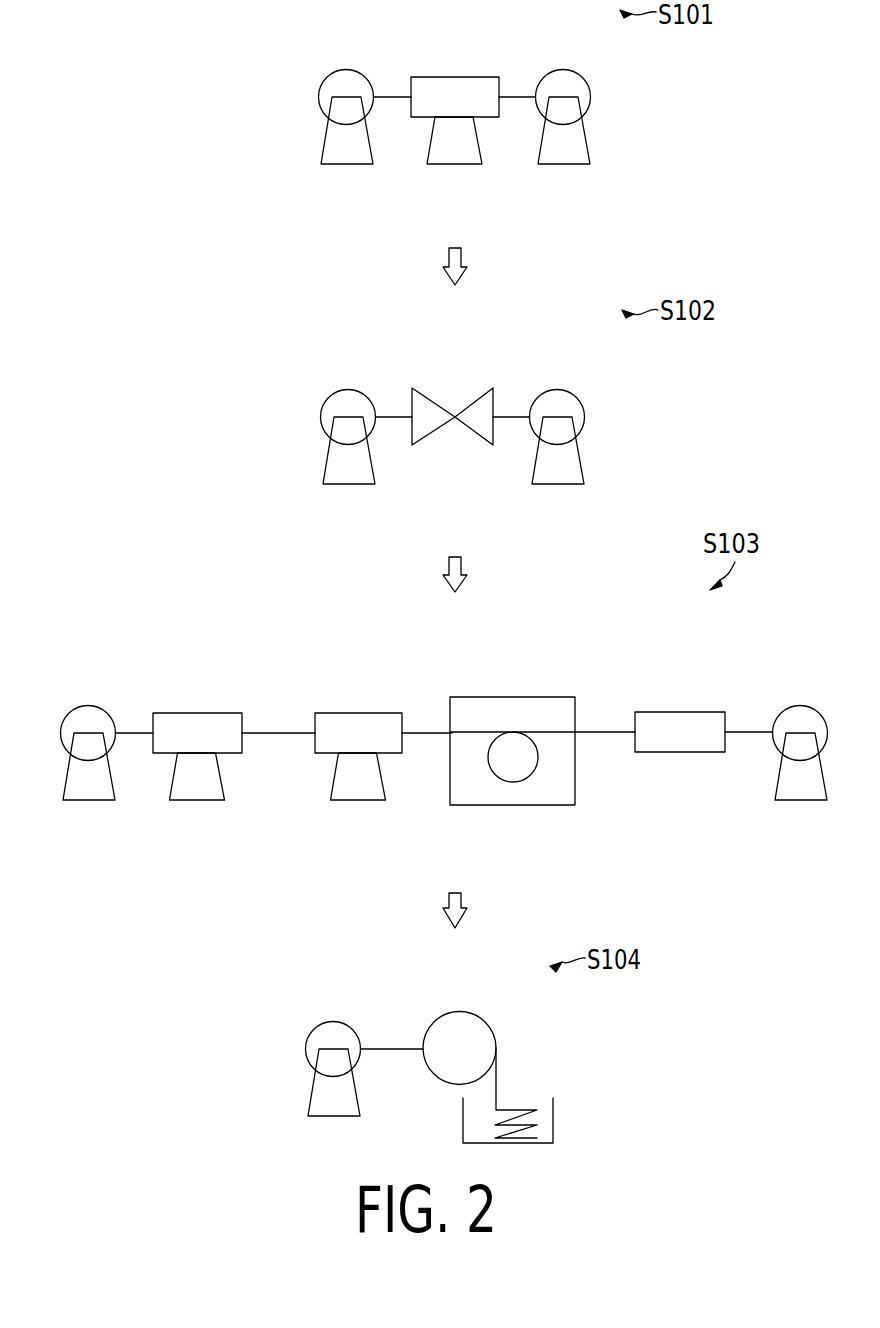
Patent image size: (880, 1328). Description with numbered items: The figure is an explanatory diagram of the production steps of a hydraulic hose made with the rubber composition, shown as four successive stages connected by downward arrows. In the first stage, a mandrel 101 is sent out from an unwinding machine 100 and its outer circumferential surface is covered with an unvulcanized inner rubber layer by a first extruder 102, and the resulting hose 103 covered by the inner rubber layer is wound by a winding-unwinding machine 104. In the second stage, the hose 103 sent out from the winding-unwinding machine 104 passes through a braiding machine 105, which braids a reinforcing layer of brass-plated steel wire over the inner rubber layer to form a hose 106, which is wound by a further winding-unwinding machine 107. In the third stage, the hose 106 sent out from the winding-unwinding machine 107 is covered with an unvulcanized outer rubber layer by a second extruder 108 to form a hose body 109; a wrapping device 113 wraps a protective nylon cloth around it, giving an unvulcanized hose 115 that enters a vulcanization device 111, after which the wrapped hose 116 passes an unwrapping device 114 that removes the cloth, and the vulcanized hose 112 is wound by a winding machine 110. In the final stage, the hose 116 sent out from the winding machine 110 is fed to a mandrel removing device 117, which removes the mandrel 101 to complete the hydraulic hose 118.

The unwinding machine 100 is at (340, 68).
The mandrel 101 is at (388, 93).
The first extruder 102 is at (437, 77).
The hose 103 is at (515, 93).
The winding-unwinding machine 104 is at (560, 68).
The braiding machine 105 is at (450, 405).
The hose 106 is at (509, 413).
The winding-unwinding machine 107 is at (555, 388).
The second extruder 108 is at (180, 712).
The hose body 109 is at (278, 730).
The winding machine 110 is at (795, 705).
The vulcanization device 111 is at (488, 697).
The vulcanized hose 112 is at (601, 730).
The wrapping device 113 is at (345, 712).
The unwrapping device 114 is at (665, 712).
The unvulcanized hose 115 is at (424, 730).
The hose 116 is at (744, 730).
The mandrel removing device 117 is at (458, 1012).
The hydraulic hose 118 is at (497, 1082).